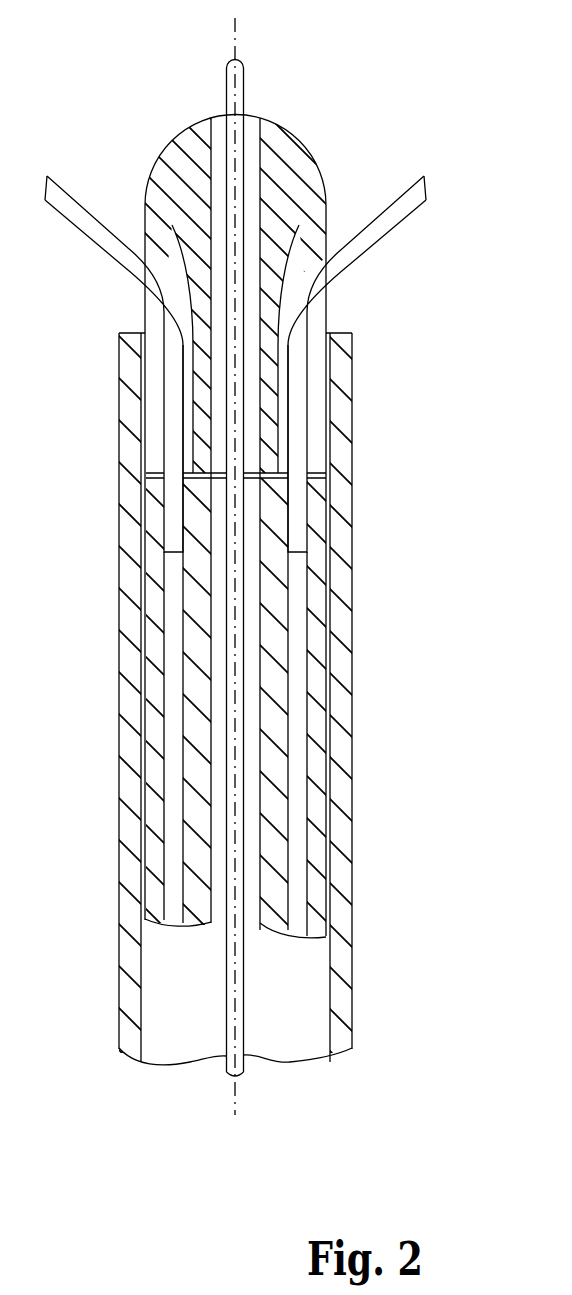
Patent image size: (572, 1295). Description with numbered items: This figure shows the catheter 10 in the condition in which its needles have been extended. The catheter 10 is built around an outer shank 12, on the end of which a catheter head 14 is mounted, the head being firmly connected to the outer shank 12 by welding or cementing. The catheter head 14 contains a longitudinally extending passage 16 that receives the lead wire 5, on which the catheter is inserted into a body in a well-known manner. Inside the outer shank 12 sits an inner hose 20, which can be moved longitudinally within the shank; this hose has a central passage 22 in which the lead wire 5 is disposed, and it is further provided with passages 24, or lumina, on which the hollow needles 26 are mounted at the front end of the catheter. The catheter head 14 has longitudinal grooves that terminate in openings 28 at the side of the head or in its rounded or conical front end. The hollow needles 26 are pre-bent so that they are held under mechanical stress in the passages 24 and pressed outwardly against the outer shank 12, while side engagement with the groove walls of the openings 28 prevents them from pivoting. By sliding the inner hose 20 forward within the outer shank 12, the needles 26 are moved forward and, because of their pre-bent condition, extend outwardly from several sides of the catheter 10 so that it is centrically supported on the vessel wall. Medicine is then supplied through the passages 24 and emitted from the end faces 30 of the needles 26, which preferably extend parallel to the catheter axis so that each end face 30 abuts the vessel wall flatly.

The lead wire 5 is at (237, 82).
The catheter 10 is at (347, 98).
The outer shank 12 is at (340, 440).
The catheter head 14 is at (307, 192).
The longitudinally extending passage 16 is at (212, 114).
The inner hose 20 is at (267, 672).
The central passage 22 is at (300, 940).
The passages (lumina) 24 is at (295, 793).
The hollow needles 26 is at (81, 205).
The openings 28 is at (313, 310).
The end faces 30 is at (43, 190).